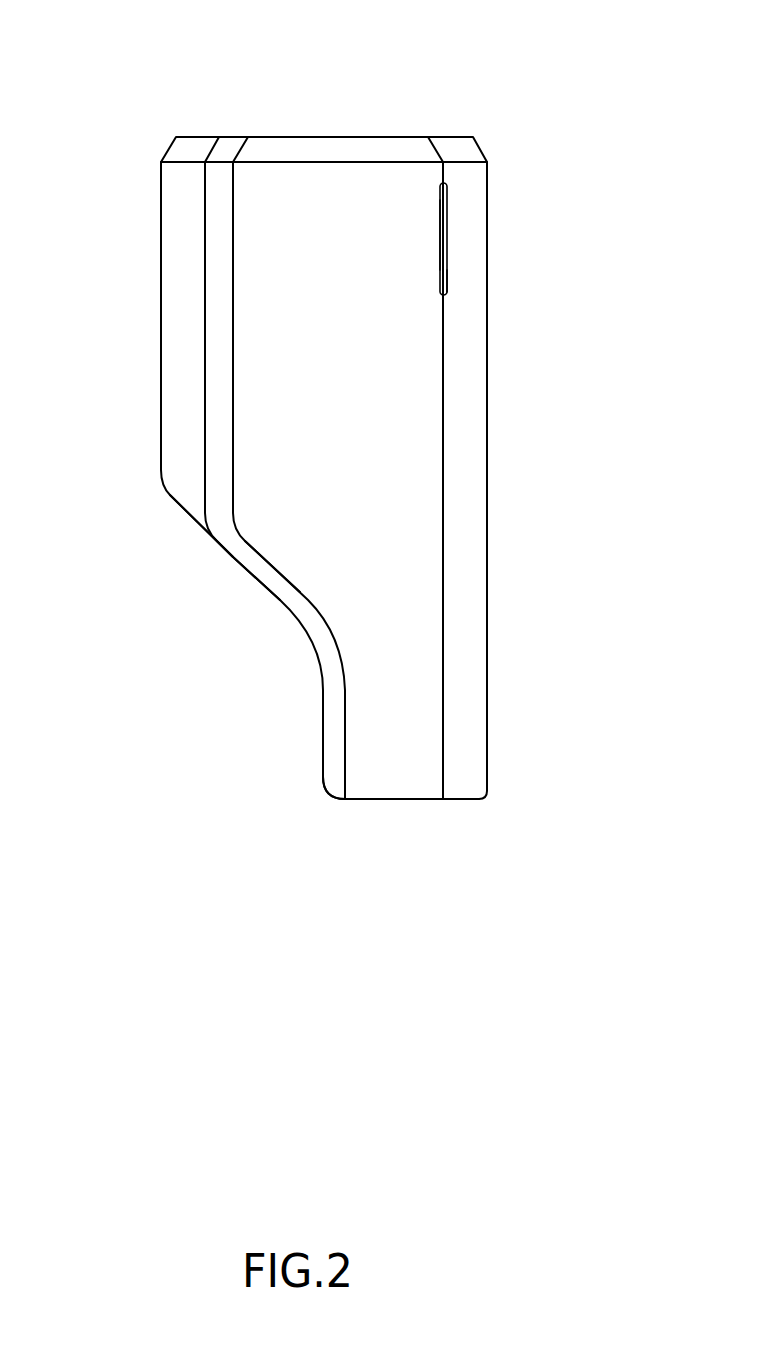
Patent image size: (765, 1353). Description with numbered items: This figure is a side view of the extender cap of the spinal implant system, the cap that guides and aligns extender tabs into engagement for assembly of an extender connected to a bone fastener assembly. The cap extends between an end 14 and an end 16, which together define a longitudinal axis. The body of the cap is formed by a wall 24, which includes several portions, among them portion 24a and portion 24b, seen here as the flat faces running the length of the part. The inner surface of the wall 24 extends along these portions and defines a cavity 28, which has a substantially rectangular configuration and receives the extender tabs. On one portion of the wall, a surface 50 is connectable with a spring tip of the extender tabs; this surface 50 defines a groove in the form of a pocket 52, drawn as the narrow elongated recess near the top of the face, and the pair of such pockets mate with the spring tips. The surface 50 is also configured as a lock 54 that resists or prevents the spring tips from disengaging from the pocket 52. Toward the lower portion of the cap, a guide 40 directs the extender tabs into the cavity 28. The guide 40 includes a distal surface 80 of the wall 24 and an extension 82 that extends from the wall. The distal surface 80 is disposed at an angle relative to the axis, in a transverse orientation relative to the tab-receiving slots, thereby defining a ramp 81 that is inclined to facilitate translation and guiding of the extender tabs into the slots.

The cavity 28 is at (387, 96).
The end 14 is at (209, 150).
The end 16 is at (387, 799).
The wall 24 is at (410, 328).
The wall portion 24a is at (168, 272).
The wall portion 24b is at (378, 428).
The surface 50 is at (443, 293).
The pocket 52 is at (443, 273).
The lock 54 is at (443, 295).
The guide 40 is at (224, 712).
The distal surface 80 is at (262, 568).
The ramp 81 is at (233, 555).
The extension 82 is at (366, 743).